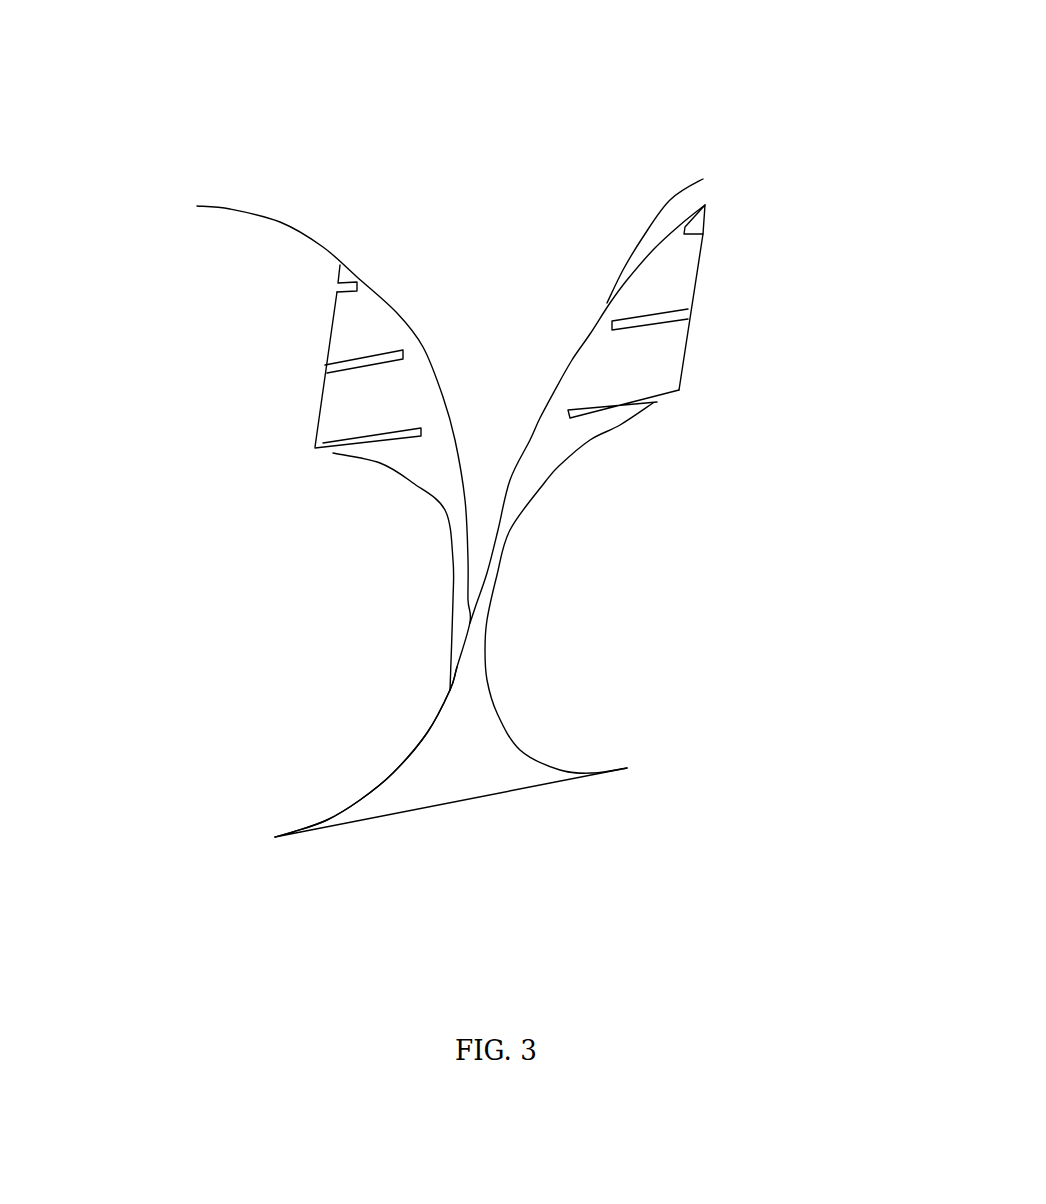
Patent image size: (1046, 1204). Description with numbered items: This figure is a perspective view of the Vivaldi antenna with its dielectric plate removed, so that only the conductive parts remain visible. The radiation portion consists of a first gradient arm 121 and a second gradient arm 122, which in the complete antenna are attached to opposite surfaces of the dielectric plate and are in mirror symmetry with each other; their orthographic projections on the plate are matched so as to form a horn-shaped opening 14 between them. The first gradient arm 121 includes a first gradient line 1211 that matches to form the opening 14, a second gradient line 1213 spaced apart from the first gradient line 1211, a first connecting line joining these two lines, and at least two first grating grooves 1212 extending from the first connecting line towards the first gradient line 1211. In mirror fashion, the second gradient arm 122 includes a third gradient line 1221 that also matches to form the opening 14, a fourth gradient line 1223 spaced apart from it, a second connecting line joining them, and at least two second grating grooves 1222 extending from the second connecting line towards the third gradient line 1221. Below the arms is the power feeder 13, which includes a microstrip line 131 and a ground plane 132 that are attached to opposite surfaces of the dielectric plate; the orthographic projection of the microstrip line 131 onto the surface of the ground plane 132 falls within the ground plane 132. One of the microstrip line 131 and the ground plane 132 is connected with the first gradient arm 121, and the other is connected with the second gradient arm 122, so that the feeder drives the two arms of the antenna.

The horn-shaped opening 14 is at (508, 223).
The first gradient arm 121 is at (885, 145).
The first gradient line 1211 is at (703, 179).
The first grating grooves 1212 is at (670, 315).
The second gradient line 1213 is at (590, 440).
The second gradient arm 122 is at (132, 197).
The third gradient line 1221 is at (357, 277).
The second grating grooves 1222 is at (340, 369).
The fourth gradient line 1223 is at (413, 480).
The power feeder 13 is at (213, 672).
The microstrip line 131 is at (455, 665).
The ground plane 132 is at (437, 773).